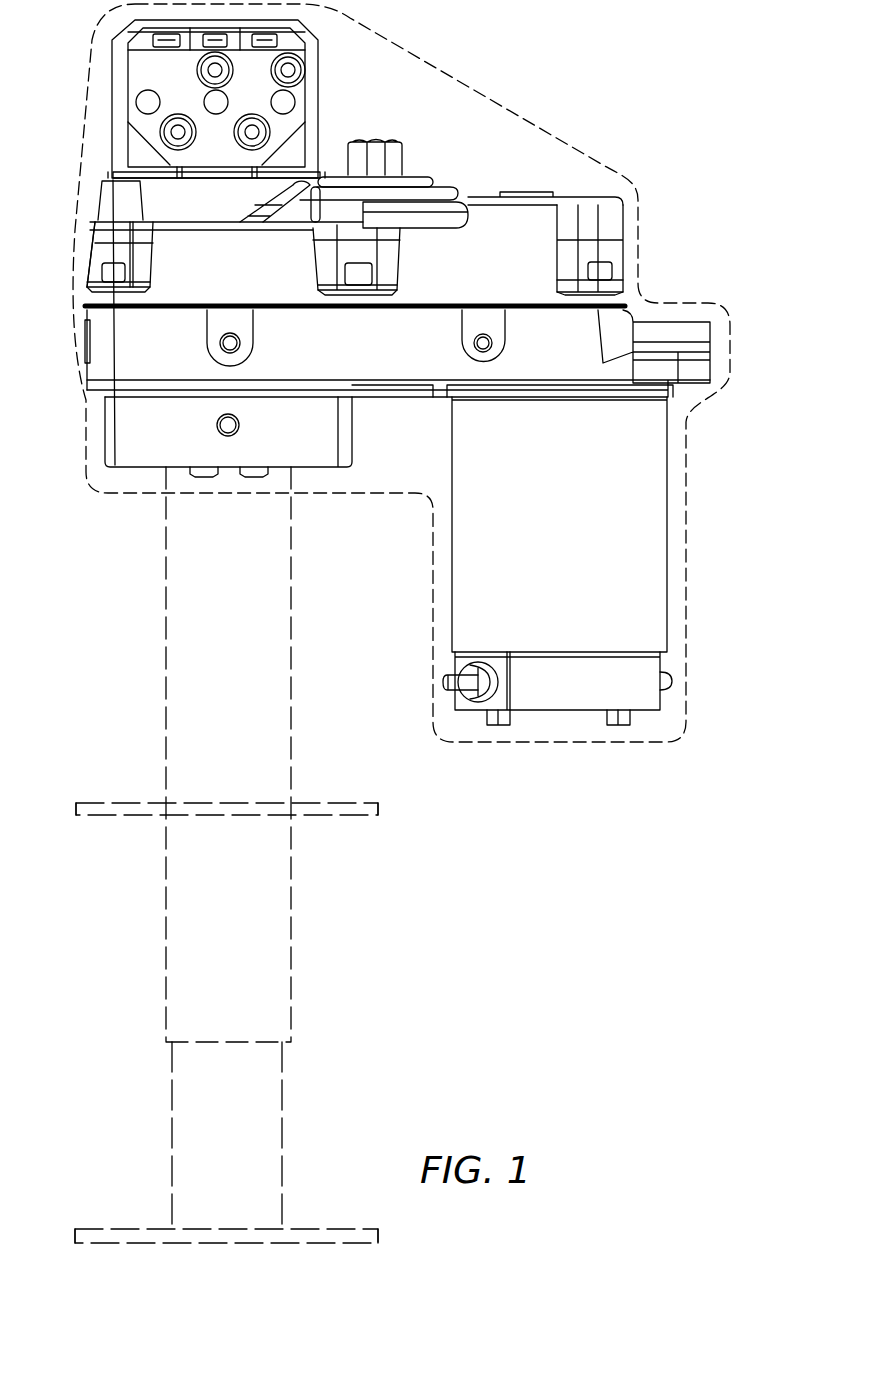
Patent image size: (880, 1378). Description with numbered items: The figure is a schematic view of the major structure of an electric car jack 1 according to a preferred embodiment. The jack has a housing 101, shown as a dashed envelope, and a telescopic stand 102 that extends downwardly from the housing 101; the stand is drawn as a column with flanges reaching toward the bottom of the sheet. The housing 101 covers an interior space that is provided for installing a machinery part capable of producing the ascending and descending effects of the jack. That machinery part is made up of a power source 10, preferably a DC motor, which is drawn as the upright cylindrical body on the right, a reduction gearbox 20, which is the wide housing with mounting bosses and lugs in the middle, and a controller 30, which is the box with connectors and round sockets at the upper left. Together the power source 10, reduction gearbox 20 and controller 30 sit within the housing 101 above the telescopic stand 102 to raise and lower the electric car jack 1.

The electric car jack 1 is at (590, 147).
The power source 10 is at (627, 503).
The reduction gearbox 20 is at (483, 196).
The controller 30 is at (125, 93).
The housing 101 is at (448, 73).
The telescopic stand 102 is at (292, 932).